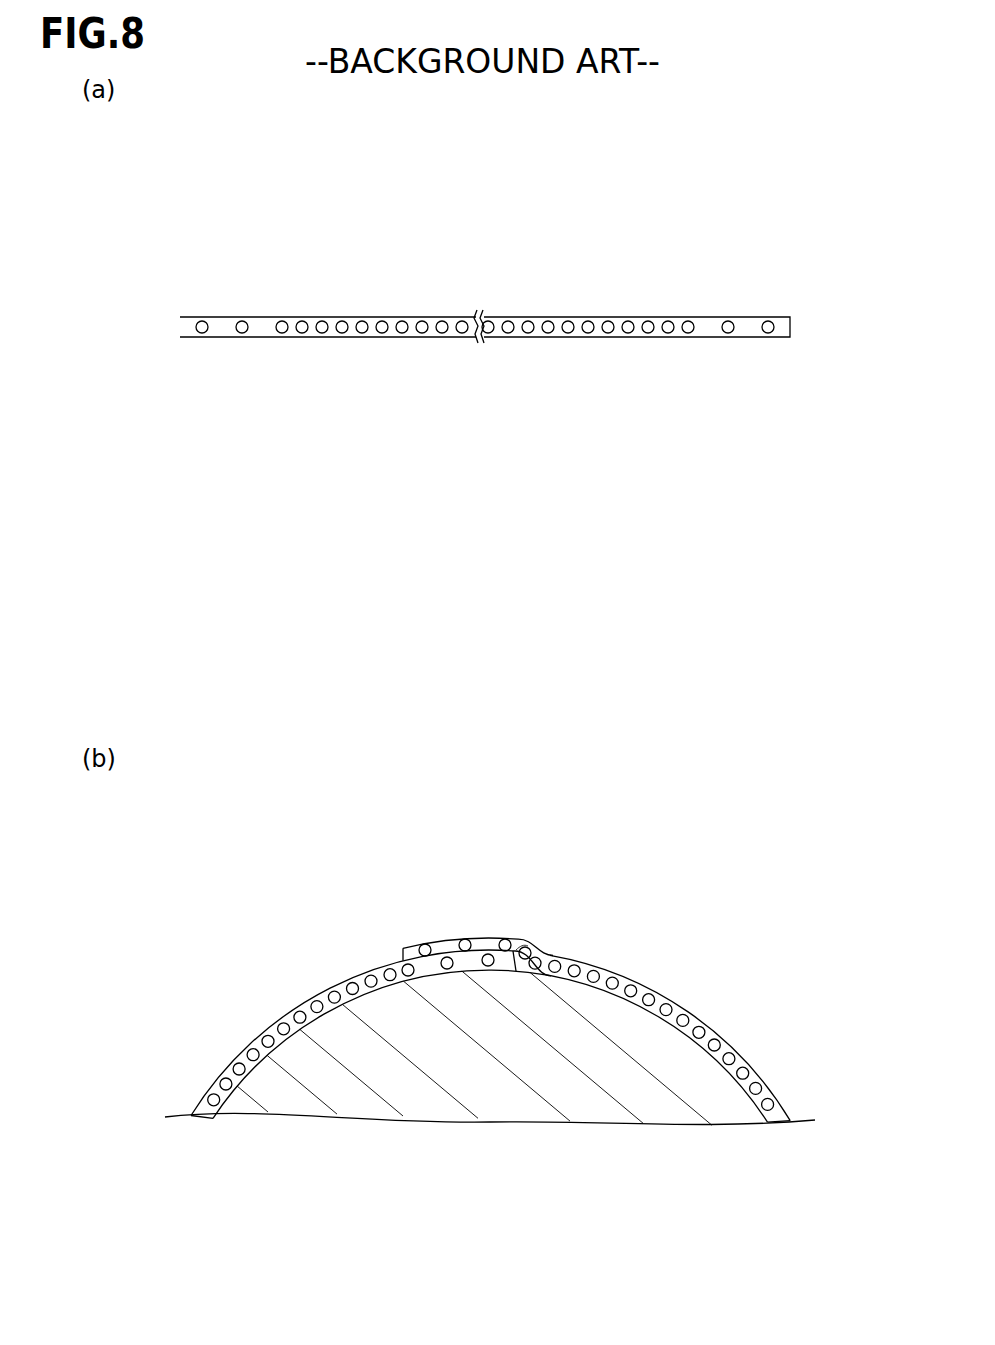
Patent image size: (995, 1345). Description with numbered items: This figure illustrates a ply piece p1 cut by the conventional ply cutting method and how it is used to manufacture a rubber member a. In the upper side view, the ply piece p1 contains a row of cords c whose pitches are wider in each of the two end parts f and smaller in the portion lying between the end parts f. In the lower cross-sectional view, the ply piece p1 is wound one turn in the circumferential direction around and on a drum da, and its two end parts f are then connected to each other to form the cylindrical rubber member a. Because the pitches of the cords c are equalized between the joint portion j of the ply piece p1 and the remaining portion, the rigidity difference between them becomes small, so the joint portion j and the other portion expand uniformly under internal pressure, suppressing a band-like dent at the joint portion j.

The ply piece p1 is at (457, 357).
The cords c is at (683, 317).
The end parts f is at (290, 348).
The joint portion j is at (490, 938).
The rubber member a is at (748, 1048).
The drum da is at (567, 1088).